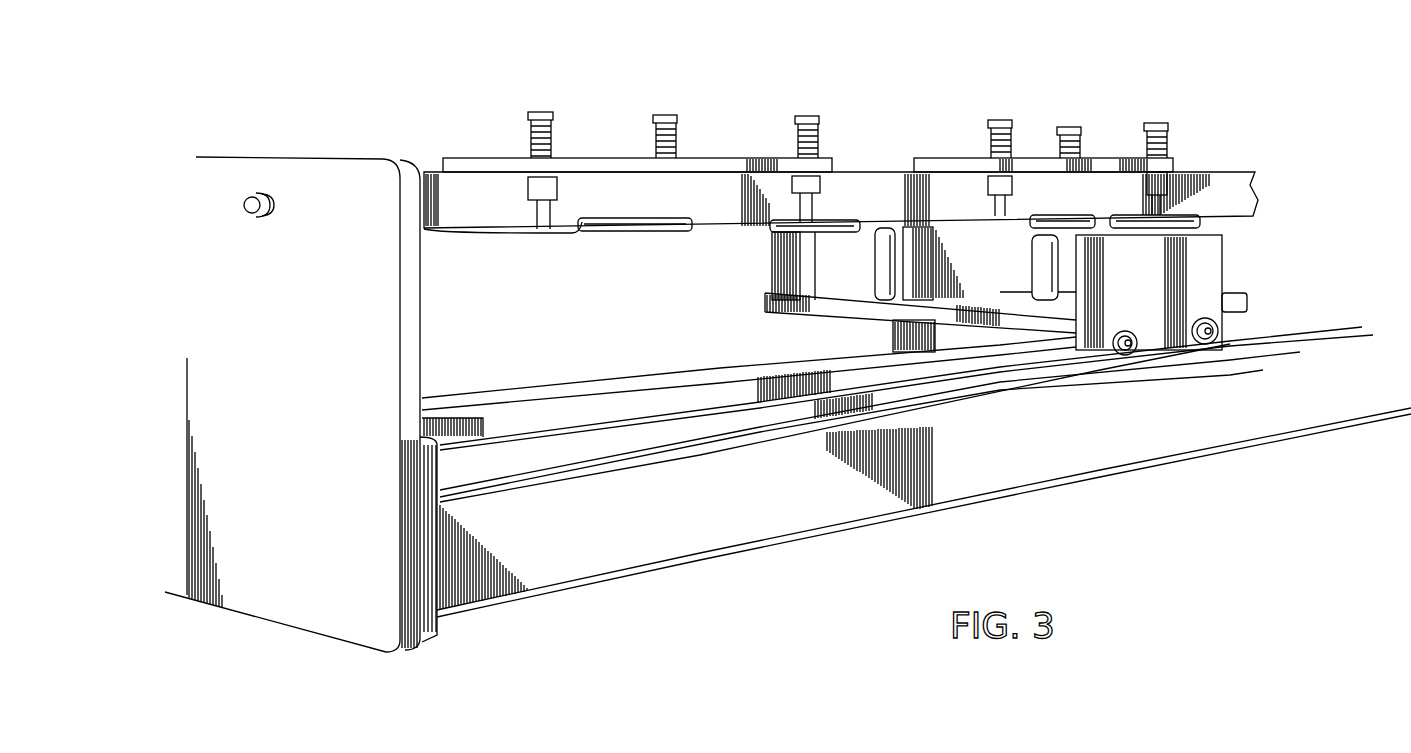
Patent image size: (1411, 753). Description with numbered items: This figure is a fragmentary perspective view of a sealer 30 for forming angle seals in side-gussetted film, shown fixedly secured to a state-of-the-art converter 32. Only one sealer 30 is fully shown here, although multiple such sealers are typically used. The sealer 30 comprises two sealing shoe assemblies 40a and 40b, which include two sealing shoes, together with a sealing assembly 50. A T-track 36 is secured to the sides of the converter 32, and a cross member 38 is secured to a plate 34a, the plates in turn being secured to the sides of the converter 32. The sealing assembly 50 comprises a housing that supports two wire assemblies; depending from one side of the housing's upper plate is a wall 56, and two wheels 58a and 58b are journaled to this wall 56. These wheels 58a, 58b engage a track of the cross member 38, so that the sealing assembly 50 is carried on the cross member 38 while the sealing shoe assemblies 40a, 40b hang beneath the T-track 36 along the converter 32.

The sealer 30 is at (1282, 246).
The converter 32 is at (327, 465).
The plate 34a is at (437, 633).
The T-track 36 is at (871, 171).
The cross member 38 is at (979, 490).
The sealing shoe assembly 40a is at (978, 128).
The sealing shoe assembly 40b is at (1177, 159).
The sealing assembly 50 is at (1038, 289).
The wall 56 is at (1146, 287).
The wheel 58a is at (1206, 345).
The wheel 58b is at (1127, 358).